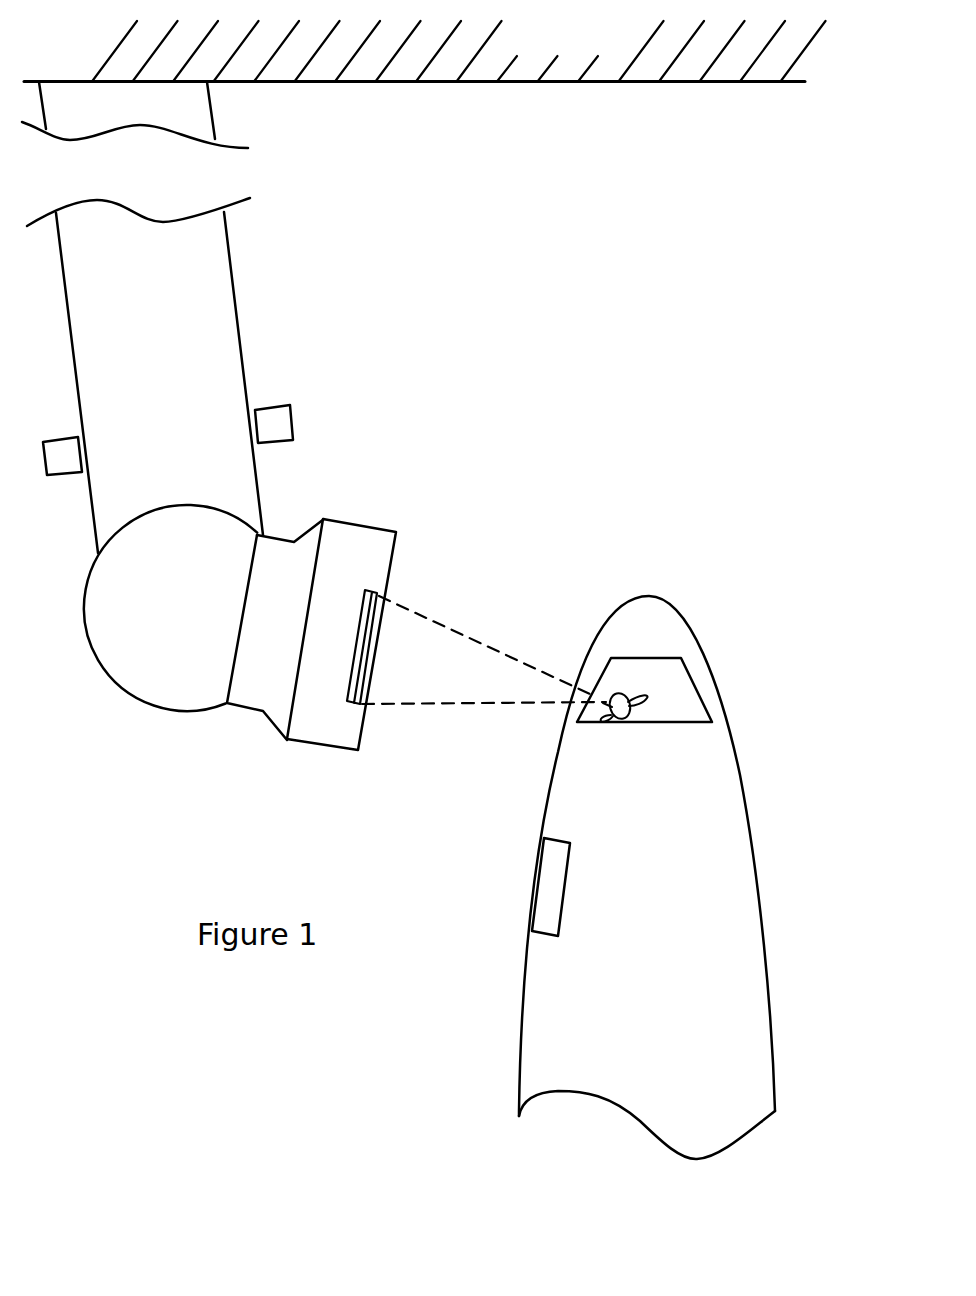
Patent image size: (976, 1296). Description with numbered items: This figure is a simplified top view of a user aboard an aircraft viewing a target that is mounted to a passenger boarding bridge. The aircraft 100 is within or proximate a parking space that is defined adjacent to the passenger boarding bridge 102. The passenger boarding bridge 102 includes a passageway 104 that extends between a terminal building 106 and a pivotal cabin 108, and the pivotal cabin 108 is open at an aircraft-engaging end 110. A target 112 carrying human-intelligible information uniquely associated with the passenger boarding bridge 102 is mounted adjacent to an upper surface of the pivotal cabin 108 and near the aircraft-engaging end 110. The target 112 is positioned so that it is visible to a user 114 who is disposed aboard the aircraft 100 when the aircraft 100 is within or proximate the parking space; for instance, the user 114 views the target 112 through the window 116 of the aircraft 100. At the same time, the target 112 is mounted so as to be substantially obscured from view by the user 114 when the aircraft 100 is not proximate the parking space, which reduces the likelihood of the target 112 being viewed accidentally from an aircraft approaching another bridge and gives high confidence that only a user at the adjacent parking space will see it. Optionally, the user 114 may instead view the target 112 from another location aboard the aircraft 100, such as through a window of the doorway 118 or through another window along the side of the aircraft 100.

The aircraft 100 is at (721, 833).
The passenger boarding bridge 102 is at (348, 337).
The passageway 104 is at (217, 305).
The terminal building 106 is at (425, 51).
The pivotal cabin 108 is at (263, 693).
The aircraft-engaging end 110 is at (394, 550).
The target 112 is at (345, 691).
The user 114 is at (617, 695).
The window 116 is at (640, 658).
The doorway 118 is at (527, 912).